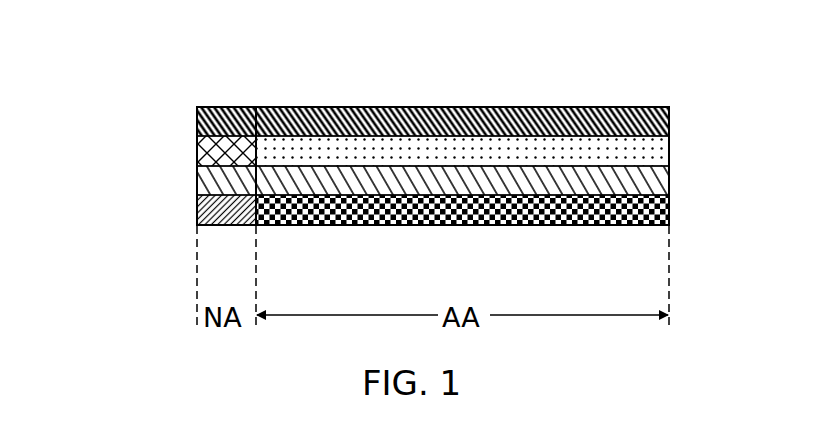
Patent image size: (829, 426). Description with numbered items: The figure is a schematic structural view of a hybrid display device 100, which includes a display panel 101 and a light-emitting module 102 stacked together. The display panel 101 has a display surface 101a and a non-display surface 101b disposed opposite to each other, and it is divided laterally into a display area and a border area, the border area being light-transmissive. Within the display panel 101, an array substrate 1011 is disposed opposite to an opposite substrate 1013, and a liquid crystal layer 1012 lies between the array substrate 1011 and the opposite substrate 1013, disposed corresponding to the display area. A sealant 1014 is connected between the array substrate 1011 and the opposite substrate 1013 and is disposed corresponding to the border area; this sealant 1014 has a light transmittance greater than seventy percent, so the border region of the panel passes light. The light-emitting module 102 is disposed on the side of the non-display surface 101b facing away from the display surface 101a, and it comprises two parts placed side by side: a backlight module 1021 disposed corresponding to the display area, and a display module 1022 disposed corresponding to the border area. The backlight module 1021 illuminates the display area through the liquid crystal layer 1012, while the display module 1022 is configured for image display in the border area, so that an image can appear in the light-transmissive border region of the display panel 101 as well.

The hybrid display device 100 is at (129, 45).
The display panel 101 is at (433, 101).
The display surface 101a is at (661, 101).
The non-display surface 101b is at (662, 204).
The array substrate 1011 is at (433, 130).
The liquid crystal layer 1012 is at (383, 150).
The opposite substrate 1013 is at (325, 107).
The sealant 1014 is at (229, 142).
The light-emitting module 102 is at (433, 253).
The backlight module 1021 is at (310, 267).
The display module 1022 is at (262, 226).